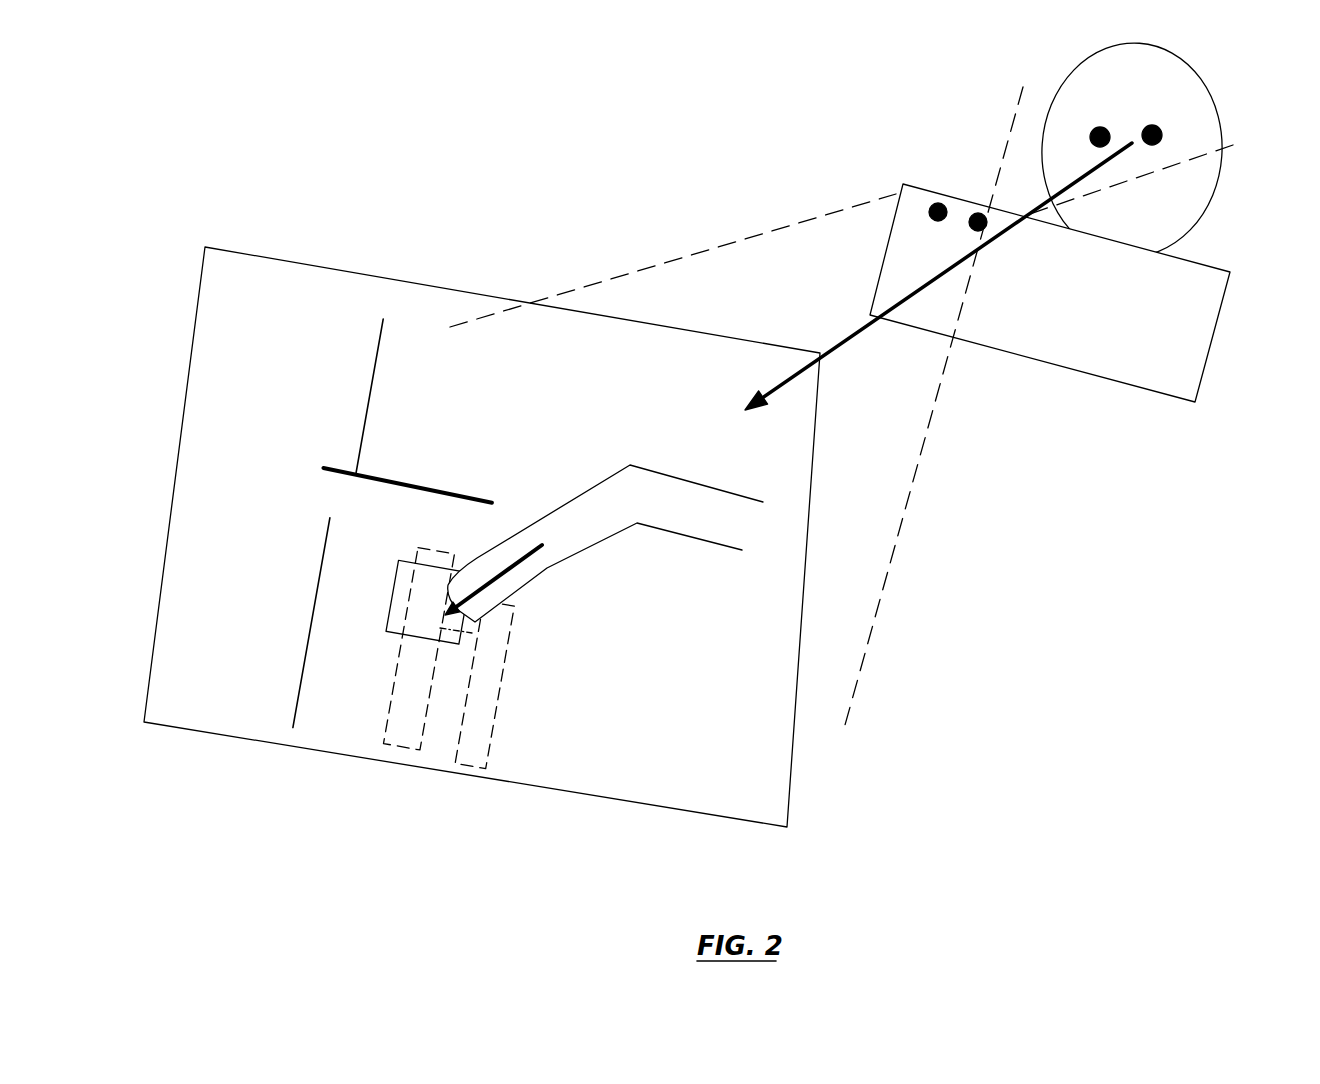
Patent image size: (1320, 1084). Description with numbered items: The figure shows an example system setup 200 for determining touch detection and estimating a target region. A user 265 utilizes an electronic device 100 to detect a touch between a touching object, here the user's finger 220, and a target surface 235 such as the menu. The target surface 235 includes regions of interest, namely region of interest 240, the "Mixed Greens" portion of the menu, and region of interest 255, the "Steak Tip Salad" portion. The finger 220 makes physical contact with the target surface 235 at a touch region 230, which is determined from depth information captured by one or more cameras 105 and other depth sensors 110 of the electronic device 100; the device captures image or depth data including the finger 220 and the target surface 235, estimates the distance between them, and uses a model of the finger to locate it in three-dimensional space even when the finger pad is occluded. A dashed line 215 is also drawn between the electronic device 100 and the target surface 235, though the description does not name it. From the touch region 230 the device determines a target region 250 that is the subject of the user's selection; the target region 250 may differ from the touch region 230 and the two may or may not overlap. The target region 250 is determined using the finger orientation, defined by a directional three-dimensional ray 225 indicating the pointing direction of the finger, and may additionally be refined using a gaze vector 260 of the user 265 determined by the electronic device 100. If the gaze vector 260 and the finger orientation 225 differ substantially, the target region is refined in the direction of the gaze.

The electronic device 100 is at (1213, 352).
The camera 105 is at (946, 203).
The depth sensor 110 is at (990, 217).
The system setup 200 is at (425, 128).
The field of view line 215 is at (681, 260).
The touching object 220 is at (682, 493).
The directional 3D ray 225 is at (511, 570).
The touch region 230 is at (489, 620).
The target surface 235 is at (233, 712).
The region of interest 240 is at (397, 748).
The target region 250 is at (413, 561).
The region of interest 255 is at (468, 776).
The gaze vector 260 is at (845, 350).
The user 265 is at (1213, 127).